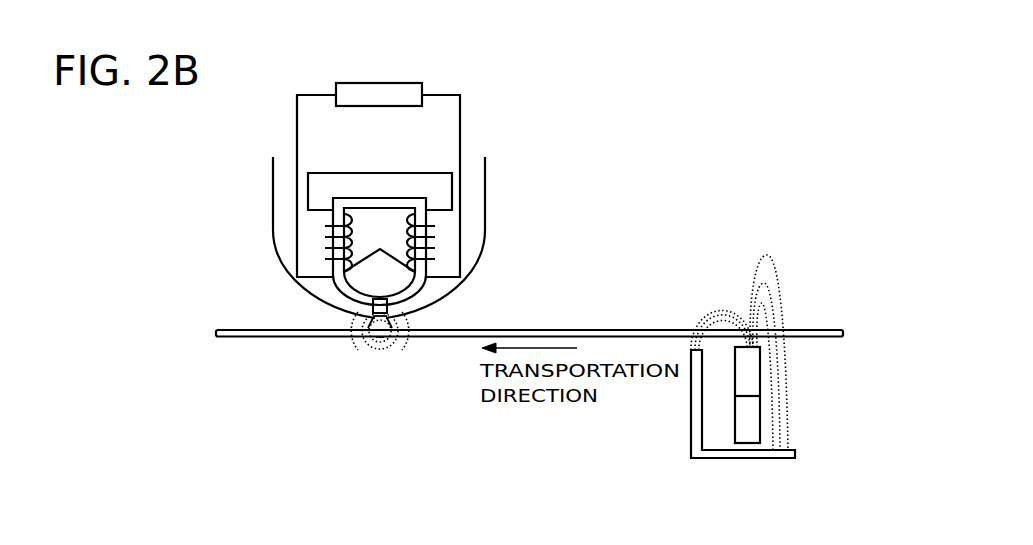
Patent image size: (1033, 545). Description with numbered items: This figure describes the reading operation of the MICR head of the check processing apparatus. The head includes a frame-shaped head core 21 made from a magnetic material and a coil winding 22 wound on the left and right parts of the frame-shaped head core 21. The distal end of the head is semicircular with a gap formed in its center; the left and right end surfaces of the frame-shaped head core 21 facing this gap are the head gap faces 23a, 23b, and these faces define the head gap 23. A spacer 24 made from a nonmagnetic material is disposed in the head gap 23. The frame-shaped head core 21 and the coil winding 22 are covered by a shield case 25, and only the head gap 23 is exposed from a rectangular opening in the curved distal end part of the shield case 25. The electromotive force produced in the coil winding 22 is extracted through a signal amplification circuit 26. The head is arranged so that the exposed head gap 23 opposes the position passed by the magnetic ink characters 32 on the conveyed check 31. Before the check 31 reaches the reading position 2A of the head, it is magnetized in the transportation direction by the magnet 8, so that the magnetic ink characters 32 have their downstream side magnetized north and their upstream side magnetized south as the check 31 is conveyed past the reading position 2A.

The reading position 2A is at (377, 338).
The magnet 8 is at (760, 378).
The frame-shaped head core 21 is at (402, 205).
The coil winding 22 is at (438, 208).
The head gap 23 is at (373, 339).
The head gap face 23a is at (366, 334).
The head gap face 23b is at (385, 339).
The spacer 24 is at (395, 292).
The shield case 25 is at (272, 195).
The signal amplification circuit 26 is at (405, 83).
The check 31 is at (567, 329).
The magnetic ink characters 32 is at (388, 339).